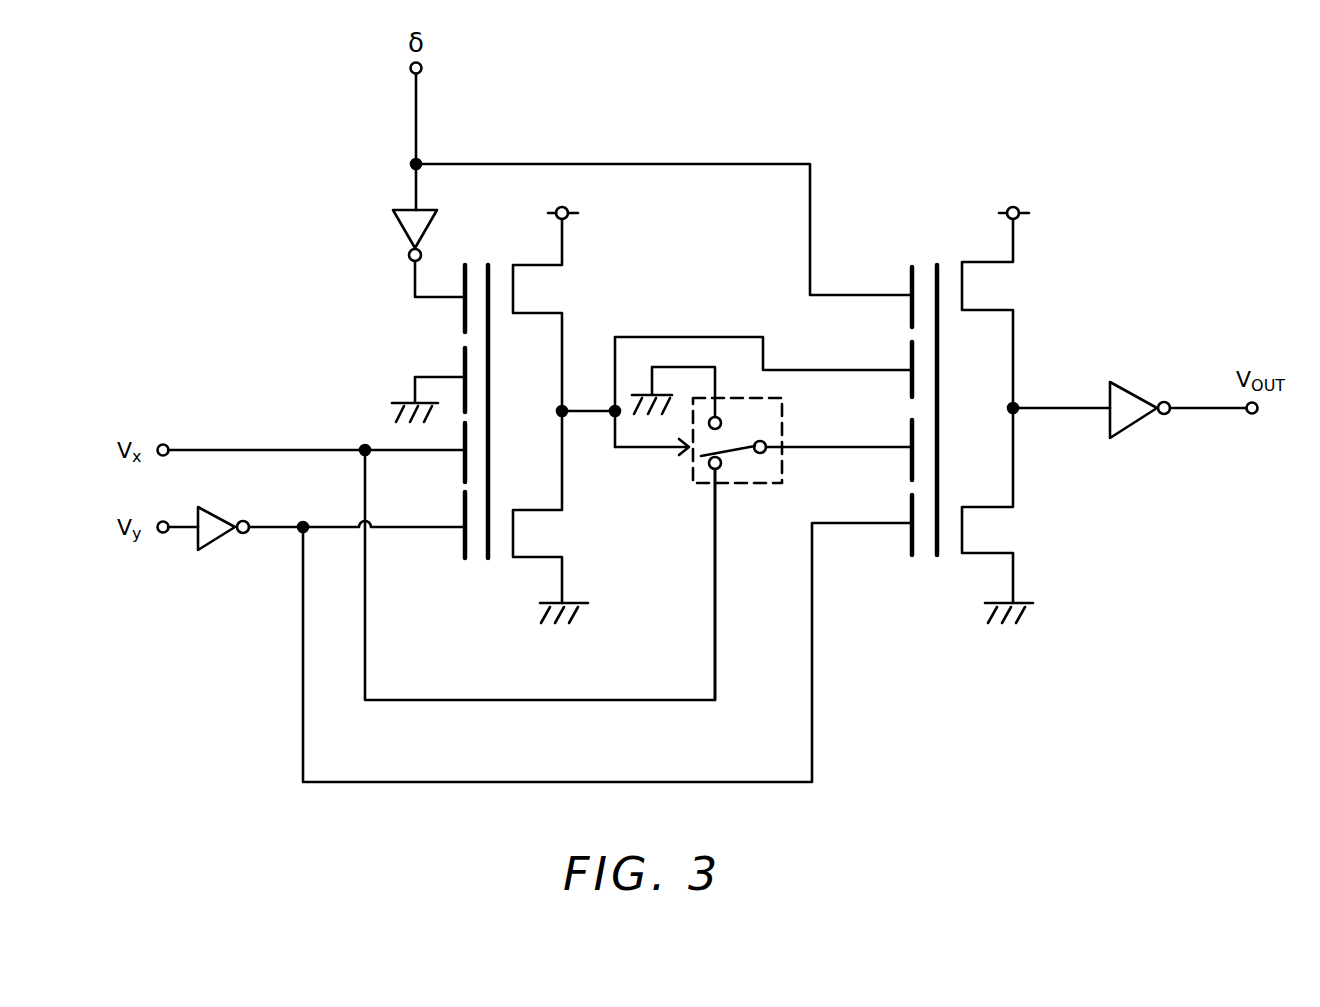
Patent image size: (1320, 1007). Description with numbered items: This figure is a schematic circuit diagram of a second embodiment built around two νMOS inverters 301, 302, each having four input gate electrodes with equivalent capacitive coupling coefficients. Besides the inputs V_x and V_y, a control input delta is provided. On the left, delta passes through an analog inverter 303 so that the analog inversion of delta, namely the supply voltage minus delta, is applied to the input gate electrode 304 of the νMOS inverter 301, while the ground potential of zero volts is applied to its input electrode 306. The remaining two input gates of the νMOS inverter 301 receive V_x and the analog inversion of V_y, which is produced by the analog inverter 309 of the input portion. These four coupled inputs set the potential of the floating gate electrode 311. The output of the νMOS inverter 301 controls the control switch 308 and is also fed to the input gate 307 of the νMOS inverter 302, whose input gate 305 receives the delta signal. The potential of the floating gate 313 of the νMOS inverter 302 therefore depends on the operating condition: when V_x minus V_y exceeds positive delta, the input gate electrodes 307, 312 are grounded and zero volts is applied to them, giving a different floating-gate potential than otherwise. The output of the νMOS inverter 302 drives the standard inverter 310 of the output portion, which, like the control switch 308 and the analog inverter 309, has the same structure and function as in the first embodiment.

The νMOS inverter 301 is at (440, 550).
The νMOS inverter 302 is at (987, 581).
The analog inverter 303 is at (398, 228).
The input gate electrode 304 is at (462, 276).
The input gate 305 is at (885, 295).
The input electrode 306 is at (428, 384).
The input gate 307 is at (885, 369).
The control switch 308 is at (645, 460).
The analog inverter 309 is at (215, 538).
The standard inverter 310 is at (1133, 392).
The floating gate electrode 311 is at (488, 265).
The input gate electrode 312 is at (880, 449).
The floating gate 313 is at (937, 262).